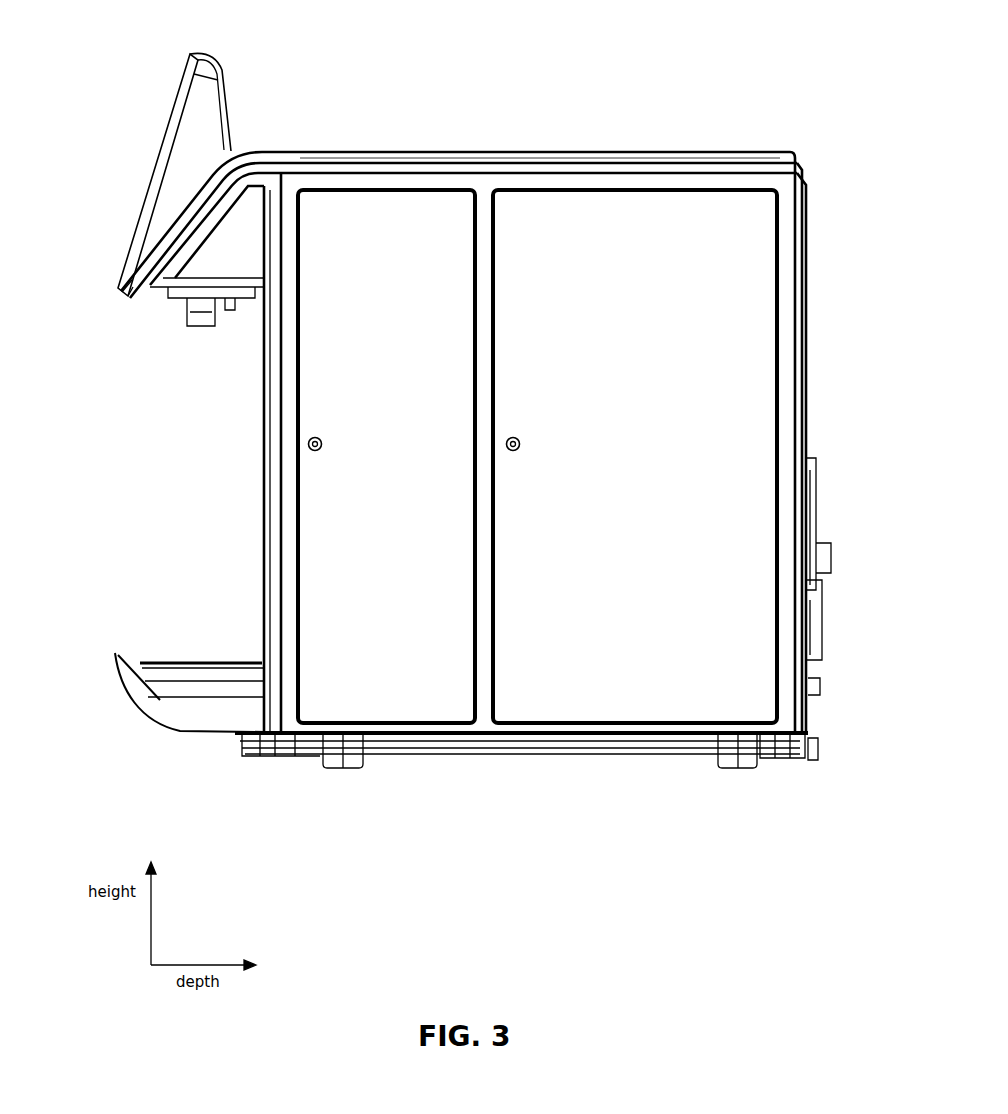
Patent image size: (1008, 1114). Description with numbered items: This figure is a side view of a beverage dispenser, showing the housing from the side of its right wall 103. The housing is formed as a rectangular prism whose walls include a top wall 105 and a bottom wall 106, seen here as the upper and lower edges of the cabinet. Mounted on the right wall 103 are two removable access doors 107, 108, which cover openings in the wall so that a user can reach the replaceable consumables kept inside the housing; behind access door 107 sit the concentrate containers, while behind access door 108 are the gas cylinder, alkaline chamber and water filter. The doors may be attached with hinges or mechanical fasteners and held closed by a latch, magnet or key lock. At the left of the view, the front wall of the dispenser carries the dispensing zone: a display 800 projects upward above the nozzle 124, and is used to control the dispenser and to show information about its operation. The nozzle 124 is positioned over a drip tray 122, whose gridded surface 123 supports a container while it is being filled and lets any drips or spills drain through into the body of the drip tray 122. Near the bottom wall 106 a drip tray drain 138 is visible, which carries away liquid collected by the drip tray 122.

The display 800 is at (184, 84).
The access door 107 is at (392, 212).
The top wall 105 is at (636, 152).
The access door 108 is at (727, 208).
The right wall 103 is at (790, 425).
The nozzle 124 is at (188, 306).
The surface 123 is at (135, 662).
The drip tray 122 is at (160, 707).
The drip tray drain 138 is at (432, 757).
The bottom wall 106 is at (596, 726).